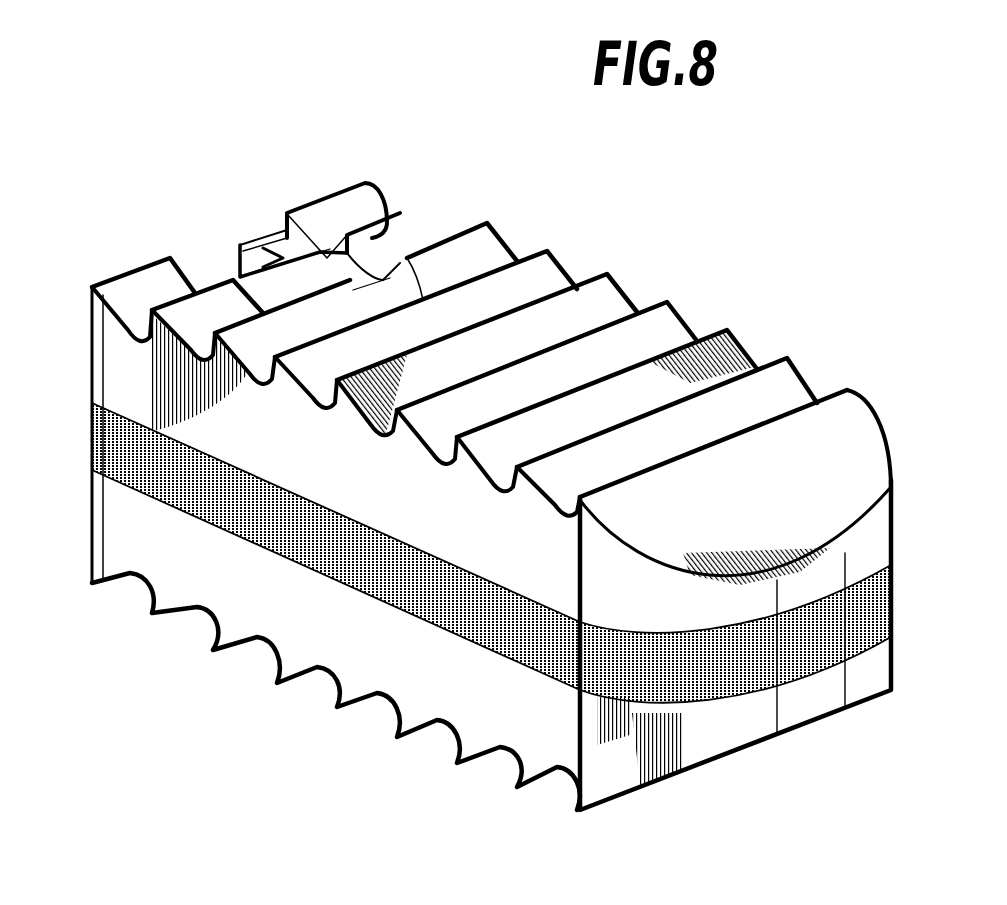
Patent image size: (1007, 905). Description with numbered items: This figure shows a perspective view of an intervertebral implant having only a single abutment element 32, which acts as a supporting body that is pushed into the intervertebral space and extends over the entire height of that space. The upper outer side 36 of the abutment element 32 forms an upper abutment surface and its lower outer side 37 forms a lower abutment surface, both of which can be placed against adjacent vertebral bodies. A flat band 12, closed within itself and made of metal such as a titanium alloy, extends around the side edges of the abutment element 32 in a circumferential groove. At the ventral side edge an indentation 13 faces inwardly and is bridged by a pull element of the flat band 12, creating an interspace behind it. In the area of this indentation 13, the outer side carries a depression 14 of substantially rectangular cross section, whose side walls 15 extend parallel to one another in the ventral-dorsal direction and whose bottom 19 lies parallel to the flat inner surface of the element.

The flat band 12 is at (861, 645).
The indentation 13 is at (218, 268).
The depression 14 is at (325, 303).
The side walls 15 is at (399, 270).
The bottom 19 is at (363, 266).
The upper outer side 36 is at (600, 302).
The abutment element 32 is at (750, 345).
The lower outer side 37 is at (367, 703).